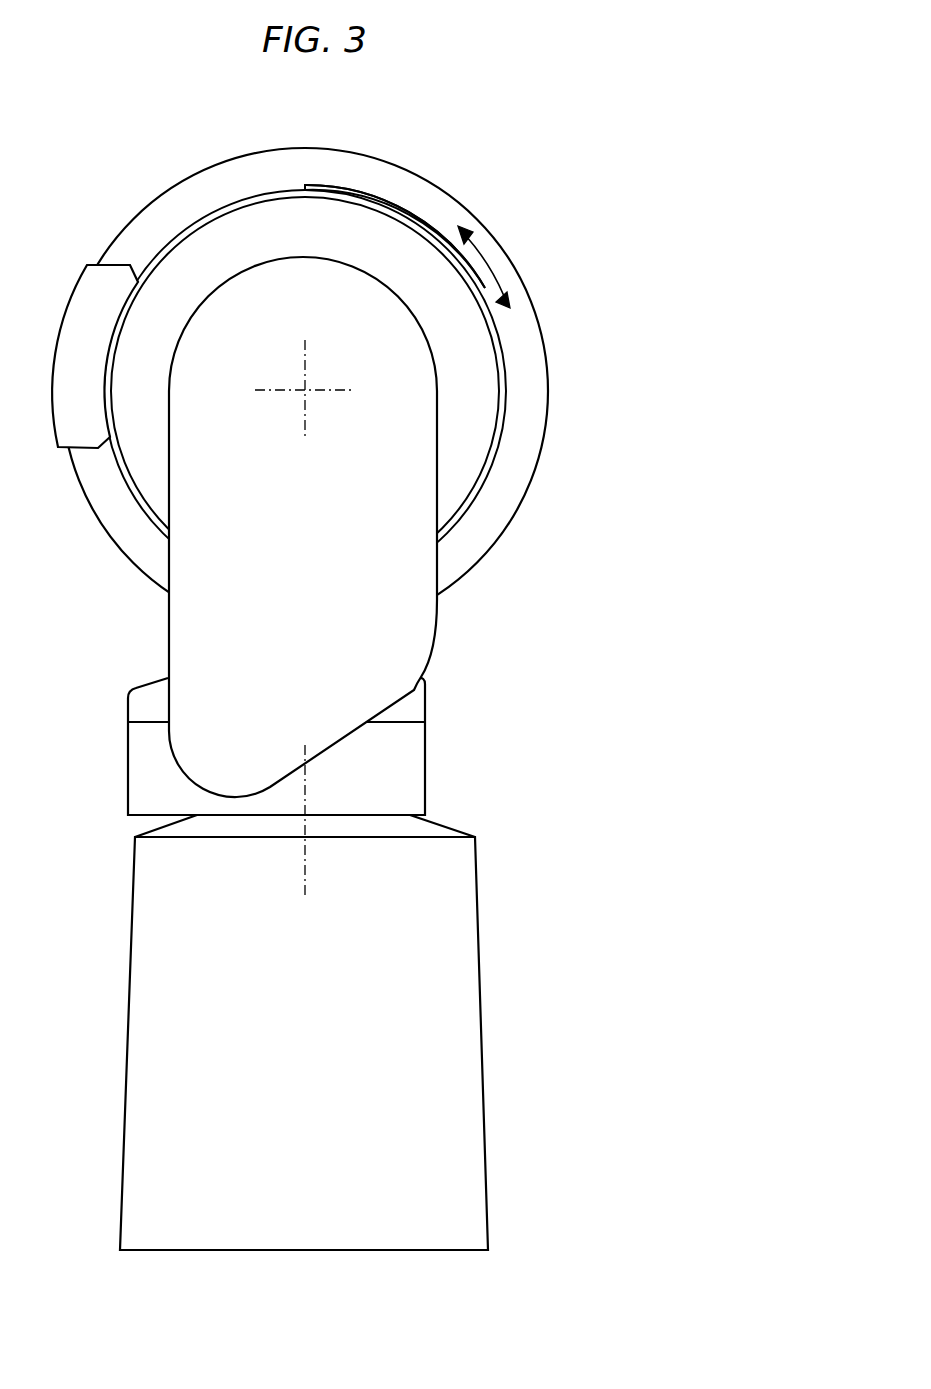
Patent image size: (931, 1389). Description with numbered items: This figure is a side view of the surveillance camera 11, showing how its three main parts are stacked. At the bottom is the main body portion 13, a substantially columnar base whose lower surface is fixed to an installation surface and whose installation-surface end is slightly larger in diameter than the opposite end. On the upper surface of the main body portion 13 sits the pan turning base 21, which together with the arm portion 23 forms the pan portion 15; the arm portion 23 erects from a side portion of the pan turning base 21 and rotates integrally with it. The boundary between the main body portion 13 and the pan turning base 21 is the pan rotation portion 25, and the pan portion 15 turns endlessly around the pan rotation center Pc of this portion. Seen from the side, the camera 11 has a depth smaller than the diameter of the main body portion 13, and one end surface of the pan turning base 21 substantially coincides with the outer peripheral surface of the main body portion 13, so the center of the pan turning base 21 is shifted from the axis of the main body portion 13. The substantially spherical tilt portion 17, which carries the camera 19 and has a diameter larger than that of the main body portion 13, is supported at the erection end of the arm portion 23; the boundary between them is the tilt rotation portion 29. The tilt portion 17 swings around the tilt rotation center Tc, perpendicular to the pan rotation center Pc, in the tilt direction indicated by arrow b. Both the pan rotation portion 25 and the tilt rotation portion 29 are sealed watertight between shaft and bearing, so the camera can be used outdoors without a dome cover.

The surveillance camera 11 is at (97, 147).
The main body portion 13 is at (120, 1184).
The pan portion 15 is at (128, 705).
The tilt portion 17 is at (363, 150).
The camera 19 is at (80, 277).
The pan turning base 21 is at (128, 757).
The arm portion 23 is at (437, 445).
The pan rotation portion 25 is at (430, 818).
The tilt rotation portion 29 is at (289, 190).
The tilt rotation center Tc is at (305, 390).
The pan rotation center Pc is at (305, 880).
The arrow b is at (495, 267).